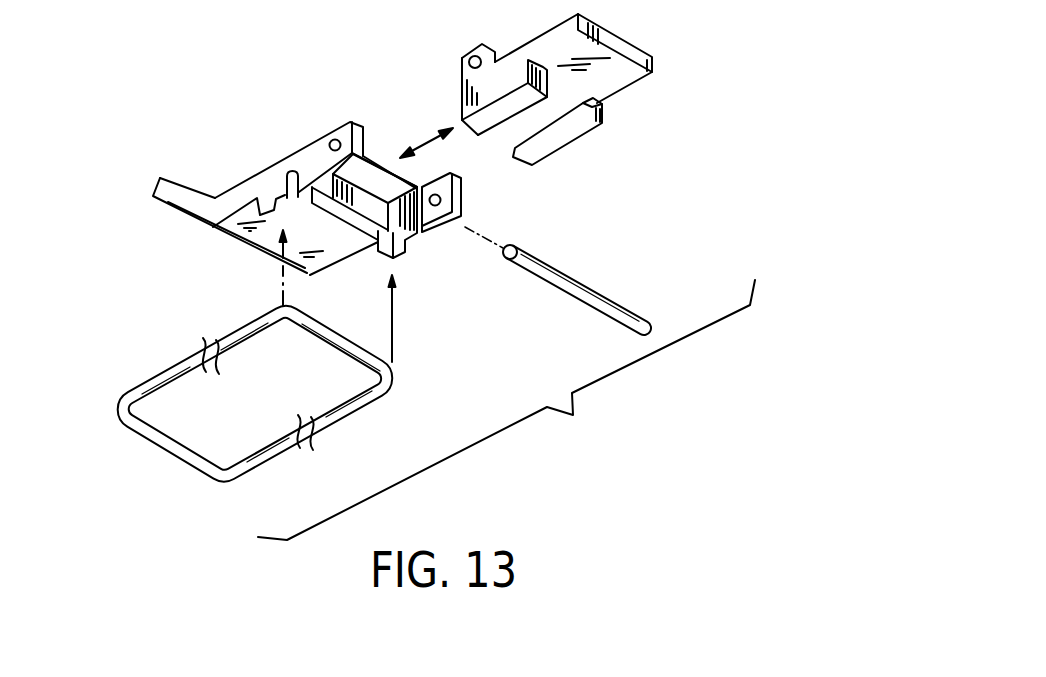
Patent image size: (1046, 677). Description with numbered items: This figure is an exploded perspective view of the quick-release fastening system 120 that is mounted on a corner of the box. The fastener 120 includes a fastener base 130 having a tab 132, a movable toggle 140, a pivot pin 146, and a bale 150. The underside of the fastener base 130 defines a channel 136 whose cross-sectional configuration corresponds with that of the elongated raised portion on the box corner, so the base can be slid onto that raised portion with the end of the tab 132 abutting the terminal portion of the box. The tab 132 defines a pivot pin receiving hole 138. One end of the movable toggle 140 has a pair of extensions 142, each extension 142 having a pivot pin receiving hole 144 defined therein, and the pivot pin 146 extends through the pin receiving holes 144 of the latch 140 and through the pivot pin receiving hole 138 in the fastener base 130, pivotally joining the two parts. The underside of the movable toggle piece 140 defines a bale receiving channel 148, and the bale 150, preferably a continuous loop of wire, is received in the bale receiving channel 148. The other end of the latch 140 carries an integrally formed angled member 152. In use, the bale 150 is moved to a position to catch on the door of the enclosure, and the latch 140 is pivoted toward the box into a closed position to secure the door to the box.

The fastening system 120 is at (506, 410).
The fastener base 130 is at (570, 98).
The tab 132 is at (631, 33).
The channel 136 is at (546, 117).
The pivot pin receiving hole 138 is at (468, 58).
The movable toggle 140 is at (138, 160).
The extensions 142 is at (358, 122).
The pivot pin receiving hole 144 is at (329, 145).
The pivot pin 146 is at (626, 304).
The bale receiving channel 148 is at (332, 213).
The bale 150 is at (195, 450).
The angled member 152 is at (160, 203).